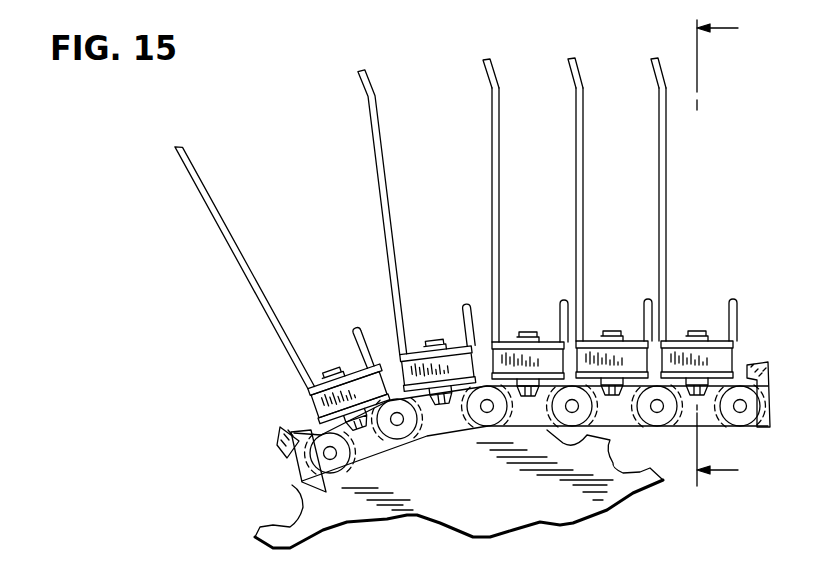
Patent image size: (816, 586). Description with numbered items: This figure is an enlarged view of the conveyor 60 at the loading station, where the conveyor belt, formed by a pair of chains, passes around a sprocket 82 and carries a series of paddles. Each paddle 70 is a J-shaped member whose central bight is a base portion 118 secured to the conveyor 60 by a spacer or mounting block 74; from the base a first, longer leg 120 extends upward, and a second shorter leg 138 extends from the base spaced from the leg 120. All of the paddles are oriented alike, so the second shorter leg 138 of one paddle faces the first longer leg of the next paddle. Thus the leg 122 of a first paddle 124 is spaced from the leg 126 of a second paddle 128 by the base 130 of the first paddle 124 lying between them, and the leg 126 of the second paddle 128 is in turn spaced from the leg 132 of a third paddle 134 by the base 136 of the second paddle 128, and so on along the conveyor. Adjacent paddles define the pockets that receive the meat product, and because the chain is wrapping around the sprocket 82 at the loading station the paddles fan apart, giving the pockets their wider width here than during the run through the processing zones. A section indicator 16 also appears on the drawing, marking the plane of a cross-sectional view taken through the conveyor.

The section line 16- 16 is at (704, 250).
The conveyor 60 is at (295, 470).
The paddle 70 is at (173, 147).
The mounting block 74 is at (314, 410).
The sprocket 82 is at (342, 515).
The base portion 118 is at (302, 377).
The leg 120 is at (260, 263).
The leg 122 is at (500, 227).
The first paddle 124 is at (492, 70).
The leg 126 is at (582, 228).
The second paddle 128 is at (568, 53).
The base 130 is at (505, 340).
The leg 132 is at (667, 218).
The third paddle 134 is at (654, 60).
The base 136 is at (587, 340).
The second shorter leg 138 is at (348, 333).